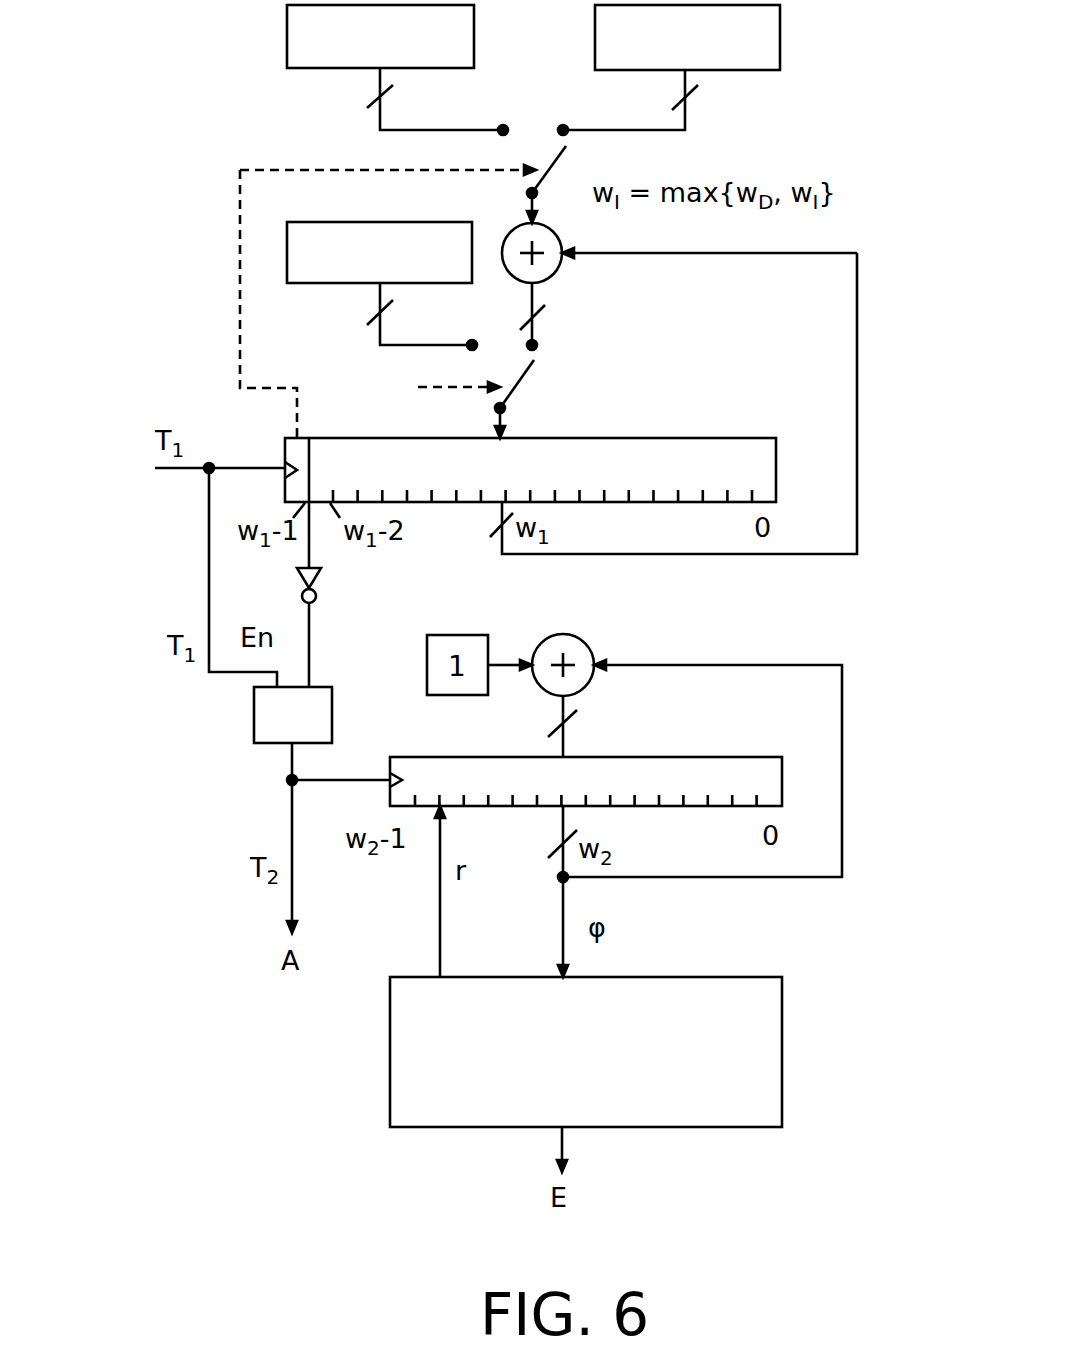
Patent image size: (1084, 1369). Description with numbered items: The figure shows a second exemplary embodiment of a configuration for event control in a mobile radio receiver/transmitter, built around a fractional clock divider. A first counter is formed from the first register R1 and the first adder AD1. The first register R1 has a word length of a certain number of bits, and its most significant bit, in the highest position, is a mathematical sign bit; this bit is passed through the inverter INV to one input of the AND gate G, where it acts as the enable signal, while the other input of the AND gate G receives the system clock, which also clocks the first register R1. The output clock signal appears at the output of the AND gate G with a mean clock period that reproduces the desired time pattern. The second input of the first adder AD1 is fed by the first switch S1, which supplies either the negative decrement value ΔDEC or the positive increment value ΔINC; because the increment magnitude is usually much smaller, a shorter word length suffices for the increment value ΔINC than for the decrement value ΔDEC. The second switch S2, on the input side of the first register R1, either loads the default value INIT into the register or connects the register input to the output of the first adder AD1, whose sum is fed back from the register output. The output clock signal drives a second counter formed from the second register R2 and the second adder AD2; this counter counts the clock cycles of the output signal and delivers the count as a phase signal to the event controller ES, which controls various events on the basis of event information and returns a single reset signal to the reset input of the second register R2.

The decrement value DEC is at (397, 70).
The increment value INC is at (669, 70).
The default value INIT is at (382, 286).
The first switch S1 is at (423, 289).
The second switch S2 is at (467, 399).
The first adder AD1 is at (551, 233).
The second adder AD2 is at (575, 645).
The first register R1 is at (584, 441).
The second register R2 is at (662, 760).
The inverter INV is at (280, 594).
The AND gate G is at (255, 718).
The event controller ES is at (586, 1052).